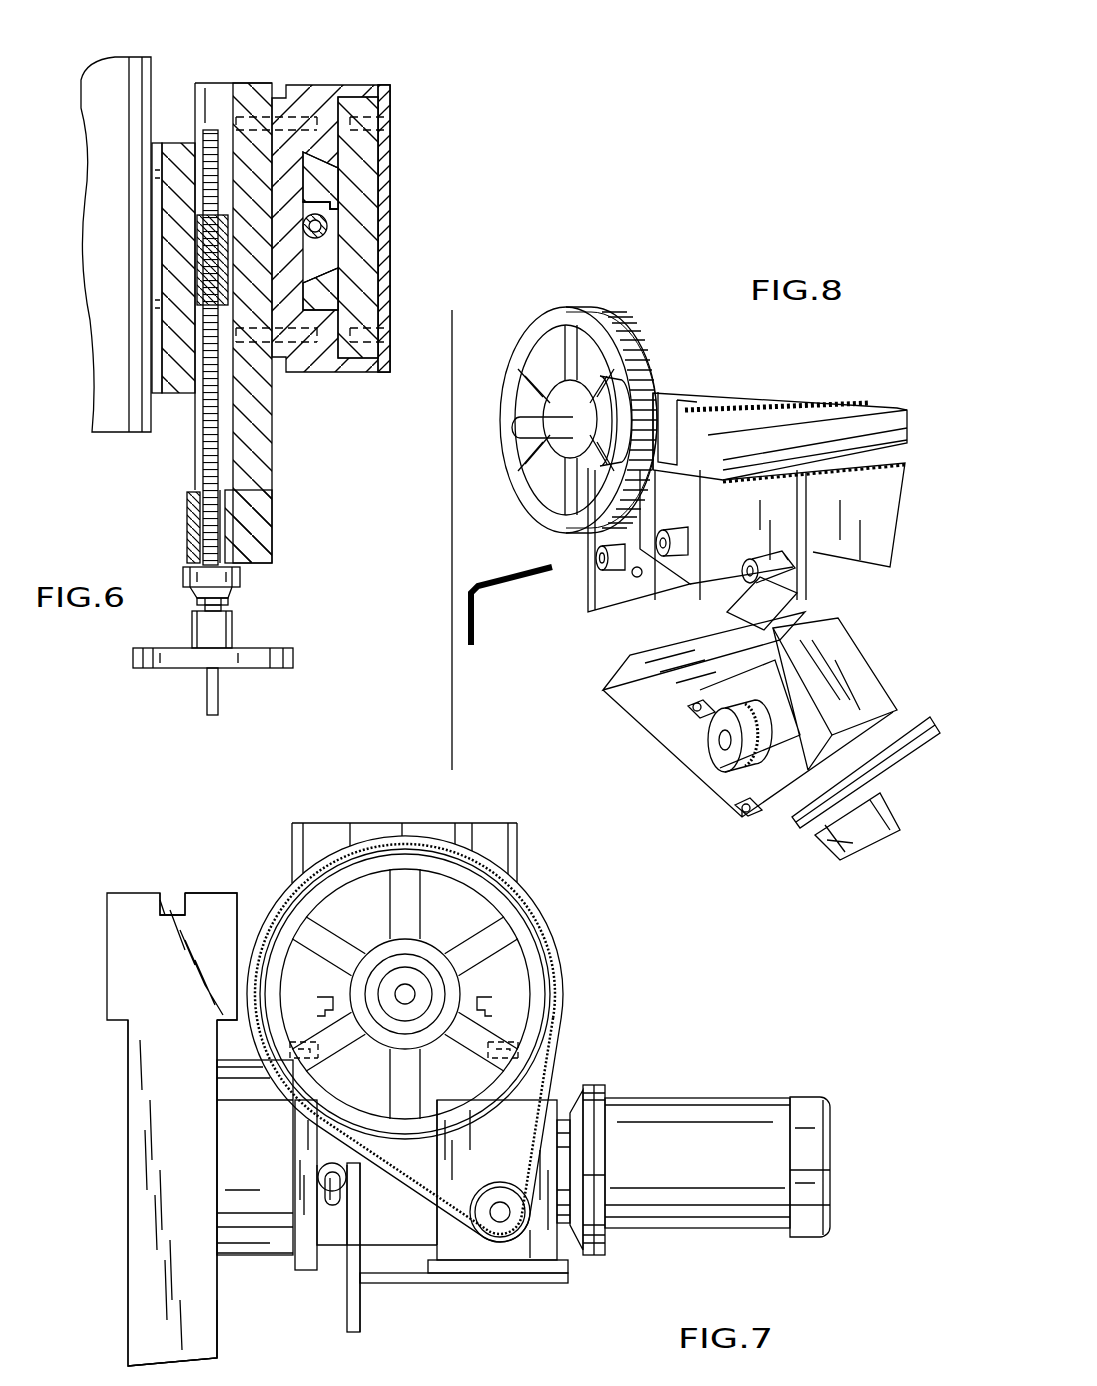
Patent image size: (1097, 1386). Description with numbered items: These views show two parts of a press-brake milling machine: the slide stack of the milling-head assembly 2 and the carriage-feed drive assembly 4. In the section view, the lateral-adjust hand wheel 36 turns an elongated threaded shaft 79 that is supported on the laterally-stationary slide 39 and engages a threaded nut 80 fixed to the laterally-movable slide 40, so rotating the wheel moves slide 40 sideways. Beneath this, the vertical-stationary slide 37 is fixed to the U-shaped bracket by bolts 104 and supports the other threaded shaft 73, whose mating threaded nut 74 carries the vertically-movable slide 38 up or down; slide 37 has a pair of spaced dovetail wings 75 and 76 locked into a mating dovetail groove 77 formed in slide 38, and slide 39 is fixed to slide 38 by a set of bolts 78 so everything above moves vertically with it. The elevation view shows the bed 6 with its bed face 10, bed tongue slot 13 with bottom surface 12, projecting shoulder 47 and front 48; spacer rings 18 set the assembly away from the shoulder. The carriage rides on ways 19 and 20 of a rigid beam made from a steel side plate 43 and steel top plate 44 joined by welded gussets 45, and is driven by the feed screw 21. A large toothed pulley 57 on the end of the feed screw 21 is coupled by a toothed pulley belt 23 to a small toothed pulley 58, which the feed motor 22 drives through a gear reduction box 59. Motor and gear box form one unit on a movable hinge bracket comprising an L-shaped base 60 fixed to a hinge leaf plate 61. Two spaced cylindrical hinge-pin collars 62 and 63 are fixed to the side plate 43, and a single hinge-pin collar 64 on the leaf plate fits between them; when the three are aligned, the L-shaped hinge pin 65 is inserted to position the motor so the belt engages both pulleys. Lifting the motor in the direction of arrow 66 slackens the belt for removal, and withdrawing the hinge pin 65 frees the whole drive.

In FIG. 6, the milling-head assembly 2 is at (442, 118).
In FIG. 6, the lateral-adjust hand wheel 36 is at (295, 660).
In FIG. 6, the vertical-stationary slide 37 is at (360, 265).
In FIG. 6, the vertically-movable slide 38 is at (307, 107).
In FIG. 6, the laterally-stationary slide 39 is at (253, 95).
In FIG. 6, the laterally-movable slide 40 is at (173, 150).
In FIG. 6, the elongated threaded shaft 73 is at (333, 205).
In FIG. 6, the threaded nut 74 is at (326, 230).
In FIG. 6, the dovetail wing 75 is at (322, 160).
In FIG. 6, the dovetail wing 76 is at (318, 294).
In FIG. 6, the dovetail groove 77 is at (322, 192).
In FIG. 6, the bolts 78 is at (232, 118).
In FIG. 6, the elongated threaded shaft 79 is at (203, 472).
In FIG. 6, the threaded nut 80 is at (200, 253).
In FIG. 6, the bolts 104 is at (393, 345).
In FIG. 8, the large toothed pulley 57 is at (630, 340).
In FIG. 7, the large toothed pulley 57 is at (405, 855).
In FIG. 8, the gussets 45 is at (785, 490).
In FIG. 7, the gussets 45 is at (333, 1236).
In FIG. 8, the hinge-pin collar 63 is at (690, 538).
In FIG. 8, the hinge-pin collar 64 is at (762, 560).
In FIG. 8, the L-shaped hinge pin 65 is at (497, 578).
In FIG. 7, the L-shaped hinge pin 65 is at (323, 1195).
In FIG. 8, the hinge leaf plate 61 is at (775, 590).
In FIG. 7, the hinge leaf plate 61 is at (355, 1255).
In FIG. 8, the steel side plate 43 is at (645, 588).
In FIG. 7, the steel side plate 43 is at (302, 1262).
In FIG. 8, the gear reduction box 59 is at (850, 665).
In FIG. 7, the gear reduction box 59 is at (553, 1238).
In FIG. 8, the L-shaped base 60 is at (678, 680).
In FIG. 7, the L-shaped base 60 is at (420, 1282).
In FIG. 8, the small toothed pulley 58 is at (720, 760).
In FIG. 7, the small toothed pulley 58 is at (503, 1232).
In FIG. 8, the hinge-pin collar 62 is at (596, 562).
In FIG. 7, the hinge-pin collar 62 is at (325, 1165).
In FIG. 7, the bed face 10 is at (125, 893).
In FIG. 7, the bed tongue slot 13 is at (173, 900).
In FIG. 7, the projecting shoulder 47 is at (225, 905).
In FIG. 7, the bottom surface 12 is at (175, 915).
In FIG. 7, the bed 6 is at (140, 1225).
In FIG. 7, the front 48 is at (220, 1340).
In FIG. 7, the spacer rings 18 is at (272, 1240).
In FIG. 7, the toothed pulley belt 23 is at (338, 855).
In FIG. 7, the way 19 is at (330, 996).
In FIG. 7, the feed screw 21 is at (410, 1002).
In FIG. 7, the way 20 is at (493, 1000).
In FIG. 7, the steel top plate 44 is at (510, 1025).
In FIG. 7, the carriage-feed drive assembly 4 is at (628, 1029).
In FIG. 7, the arrow 66 is at (675, 1043).
In FIG. 7, the feed motor 22 is at (745, 1115).